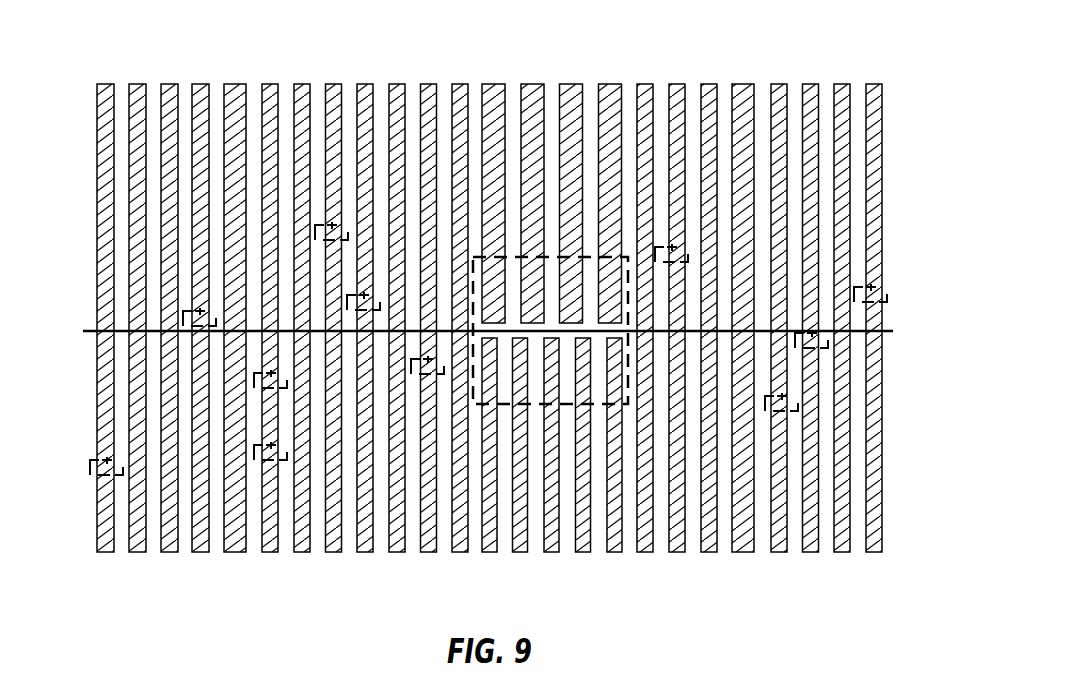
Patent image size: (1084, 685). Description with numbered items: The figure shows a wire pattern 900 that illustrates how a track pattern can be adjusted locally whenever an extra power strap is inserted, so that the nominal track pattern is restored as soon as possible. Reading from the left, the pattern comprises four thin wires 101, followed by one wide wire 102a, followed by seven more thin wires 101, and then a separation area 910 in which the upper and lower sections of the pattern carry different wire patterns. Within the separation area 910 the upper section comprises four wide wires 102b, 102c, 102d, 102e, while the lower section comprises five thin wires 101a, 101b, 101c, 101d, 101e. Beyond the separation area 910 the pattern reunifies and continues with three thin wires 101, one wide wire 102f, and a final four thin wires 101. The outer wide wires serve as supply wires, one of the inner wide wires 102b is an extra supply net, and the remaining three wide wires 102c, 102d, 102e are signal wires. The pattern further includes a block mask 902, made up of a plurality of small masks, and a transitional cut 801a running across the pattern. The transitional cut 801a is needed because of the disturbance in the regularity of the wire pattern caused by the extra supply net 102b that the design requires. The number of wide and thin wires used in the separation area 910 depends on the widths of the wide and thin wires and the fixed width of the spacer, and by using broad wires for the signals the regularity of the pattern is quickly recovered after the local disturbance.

The wire pattern 900 is at (852, 52).
The thin wire 101 is at (110, 85).
The thin wire 101a is at (488, 553).
The thin wire 101b is at (522, 553).
The thin wire 101c is at (552, 553).
The thin wire 101d is at (582, 553).
The thin wire 101e is at (612, 553).
The wide wire 102a is at (237, 85).
The wide wire 102b is at (493, 84).
The wide wire 102c is at (530, 84).
The wide wire 102d is at (570, 84).
The wide wire 102e is at (608, 84).
The wide wire 102f is at (742, 84).
The transitional cut 801a is at (893, 331).
The block mask 902 is at (90, 468).
The separation area 910 is at (630, 386).